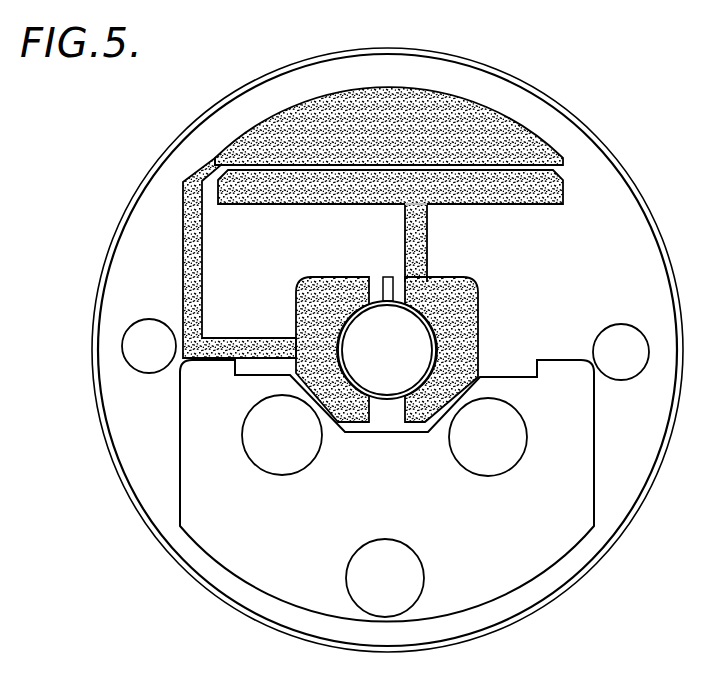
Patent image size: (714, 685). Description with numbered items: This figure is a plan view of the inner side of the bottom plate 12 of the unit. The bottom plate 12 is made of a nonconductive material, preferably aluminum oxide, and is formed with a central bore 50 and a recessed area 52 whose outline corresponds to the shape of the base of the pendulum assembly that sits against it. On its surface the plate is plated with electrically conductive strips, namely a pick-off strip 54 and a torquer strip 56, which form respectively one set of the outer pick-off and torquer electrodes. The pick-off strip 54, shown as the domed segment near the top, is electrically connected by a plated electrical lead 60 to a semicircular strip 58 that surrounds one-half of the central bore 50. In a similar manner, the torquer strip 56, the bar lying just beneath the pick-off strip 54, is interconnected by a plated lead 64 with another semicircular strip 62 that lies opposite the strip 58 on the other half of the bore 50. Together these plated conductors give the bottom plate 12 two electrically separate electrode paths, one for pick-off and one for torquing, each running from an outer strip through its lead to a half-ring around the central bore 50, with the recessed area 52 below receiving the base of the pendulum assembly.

The bottom plate 12 is at (122, 176).
The central bore 50 is at (392, 303).
The recessed area 52 is at (492, 529).
The pick-off strip 54 is at (482, 132).
The torquer strip 56 is at (530, 194).
The semicircular strip 58 is at (330, 282).
The plated electrical lead 60 is at (220, 337).
The semicircular strip 62 is at (479, 331).
The plated lead 64 is at (428, 245).